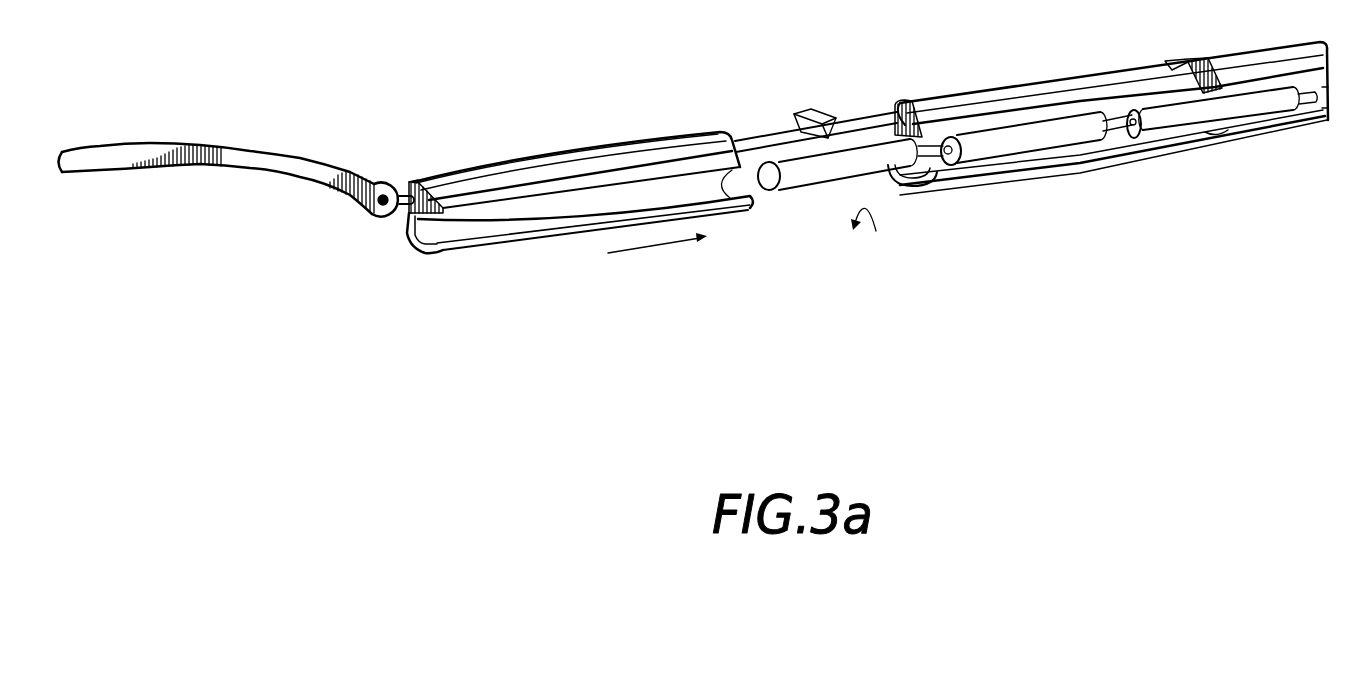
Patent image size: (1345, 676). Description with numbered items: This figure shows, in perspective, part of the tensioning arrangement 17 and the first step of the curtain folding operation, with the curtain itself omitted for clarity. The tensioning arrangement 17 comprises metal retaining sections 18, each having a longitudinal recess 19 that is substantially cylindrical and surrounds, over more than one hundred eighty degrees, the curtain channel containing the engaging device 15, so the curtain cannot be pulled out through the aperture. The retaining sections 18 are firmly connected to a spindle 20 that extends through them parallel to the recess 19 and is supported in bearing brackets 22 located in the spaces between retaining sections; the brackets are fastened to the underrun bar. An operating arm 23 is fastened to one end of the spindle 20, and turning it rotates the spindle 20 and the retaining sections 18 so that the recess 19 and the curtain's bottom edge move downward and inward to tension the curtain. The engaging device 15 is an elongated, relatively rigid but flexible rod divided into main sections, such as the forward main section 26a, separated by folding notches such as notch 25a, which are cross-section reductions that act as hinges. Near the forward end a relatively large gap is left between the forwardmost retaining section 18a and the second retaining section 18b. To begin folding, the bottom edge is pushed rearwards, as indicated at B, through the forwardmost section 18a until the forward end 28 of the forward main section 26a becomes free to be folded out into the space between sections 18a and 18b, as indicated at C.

The engaging device 15 is at (890, 190).
The tensioning arrangement 17 is at (459, 160).
The retaining section 18 is at (537, 252).
The forwardmost retaining section 18a is at (547, 162).
The second retaining section 18b is at (1078, 92).
The recess 19 is at (428, 230).
The spindle 20 is at (762, 137).
The bearing bracket 22 is at (818, 118).
The operating arm 23 is at (232, 158).
The folding notch 25a is at (940, 138).
The forward main section 26a is at (820, 167).
The forward end of the forward main section 28 is at (767, 183).
The rearward pushing movement B is at (653, 247).
The folding-out movement C is at (873, 234).